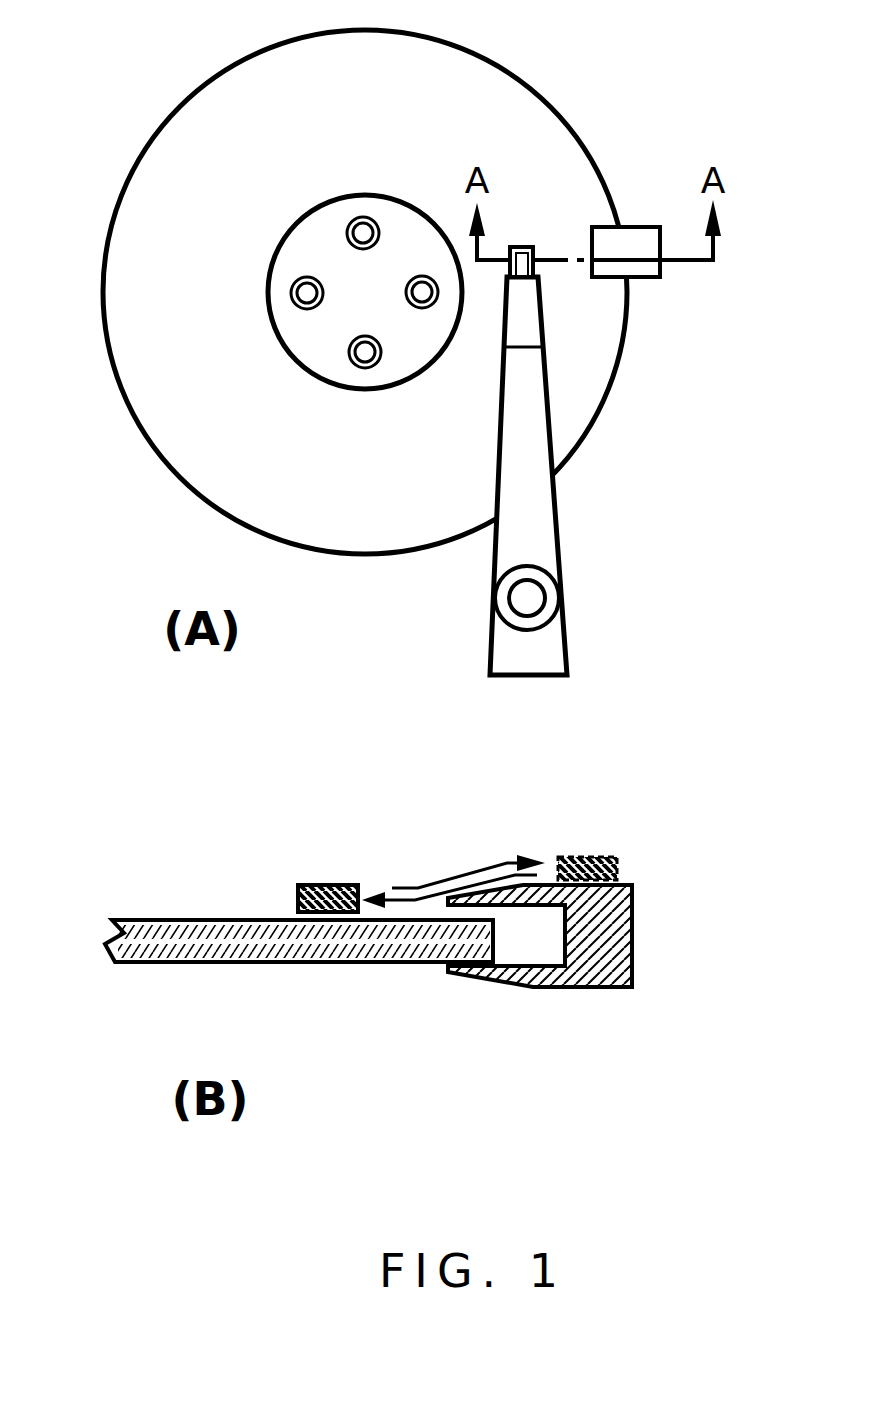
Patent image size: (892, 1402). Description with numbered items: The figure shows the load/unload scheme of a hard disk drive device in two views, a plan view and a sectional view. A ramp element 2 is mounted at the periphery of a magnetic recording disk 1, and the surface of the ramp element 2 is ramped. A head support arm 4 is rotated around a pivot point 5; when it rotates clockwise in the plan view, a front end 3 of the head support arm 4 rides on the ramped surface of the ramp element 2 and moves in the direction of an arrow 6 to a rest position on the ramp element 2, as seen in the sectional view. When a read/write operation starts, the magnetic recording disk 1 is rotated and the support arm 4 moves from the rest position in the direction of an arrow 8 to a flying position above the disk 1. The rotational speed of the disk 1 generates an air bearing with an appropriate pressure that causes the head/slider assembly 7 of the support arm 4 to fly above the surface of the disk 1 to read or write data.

The magnetic recording disk 1 is at (538, 134).
The ramp element 2 is at (618, 230).
The front end 3 is at (515, 250).
The head support arm 4 is at (562, 636).
The pivot point 5 is at (528, 582).
The arrow 6 is at (460, 878).
The head/slider assembly 7 is at (522, 318).
The arrow 8 is at (420, 888).